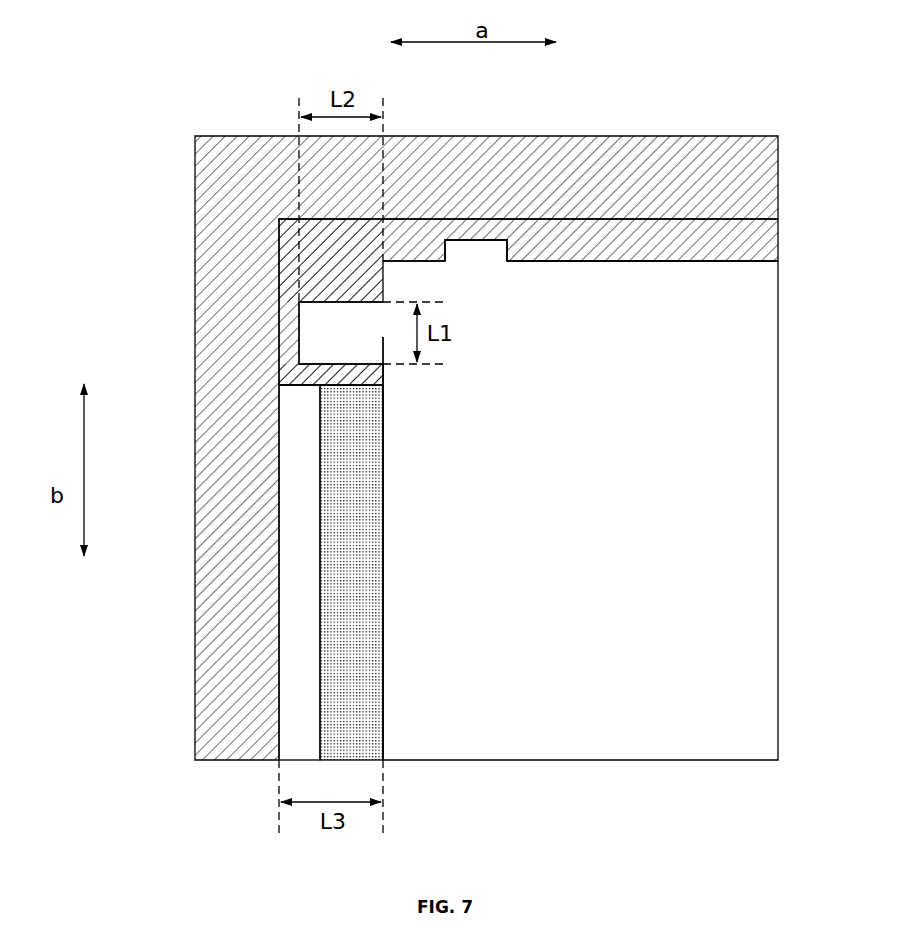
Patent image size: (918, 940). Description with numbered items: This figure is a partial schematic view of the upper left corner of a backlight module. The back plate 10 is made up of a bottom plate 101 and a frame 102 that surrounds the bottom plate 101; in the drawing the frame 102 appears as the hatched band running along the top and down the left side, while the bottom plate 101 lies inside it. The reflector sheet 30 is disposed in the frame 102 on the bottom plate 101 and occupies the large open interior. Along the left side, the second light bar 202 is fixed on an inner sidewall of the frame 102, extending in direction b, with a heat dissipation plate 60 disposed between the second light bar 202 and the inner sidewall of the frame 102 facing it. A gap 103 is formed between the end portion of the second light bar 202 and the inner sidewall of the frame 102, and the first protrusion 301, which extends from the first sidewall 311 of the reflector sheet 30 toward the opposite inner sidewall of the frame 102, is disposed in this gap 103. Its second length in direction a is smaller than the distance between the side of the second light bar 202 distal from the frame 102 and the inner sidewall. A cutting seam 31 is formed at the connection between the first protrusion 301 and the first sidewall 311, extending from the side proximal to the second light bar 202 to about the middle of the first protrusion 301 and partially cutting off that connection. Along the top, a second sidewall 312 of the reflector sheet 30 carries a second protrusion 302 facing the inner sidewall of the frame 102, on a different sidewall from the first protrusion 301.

The back plate 10 is at (582, 78).
The bottom plate 101 is at (677, 240).
The frame 102 is at (584, 197).
The gap 103 is at (308, 268).
The first protrusion 301 is at (367, 328).
The second protrusion 302 is at (484, 258).
The cutting seam 31 is at (372, 357).
The first sidewall 311 is at (374, 532).
The second sidewall 312 is at (746, 250).
The second light bar 202 is at (363, 628).
The heat dissipation plate 60 is at (305, 705).
The reflector sheet 30 is at (755, 613).